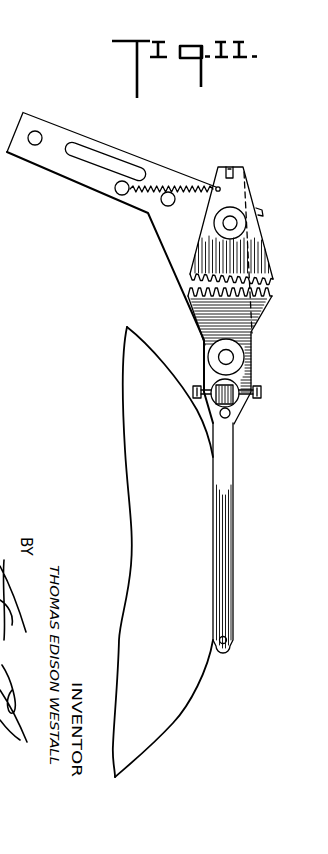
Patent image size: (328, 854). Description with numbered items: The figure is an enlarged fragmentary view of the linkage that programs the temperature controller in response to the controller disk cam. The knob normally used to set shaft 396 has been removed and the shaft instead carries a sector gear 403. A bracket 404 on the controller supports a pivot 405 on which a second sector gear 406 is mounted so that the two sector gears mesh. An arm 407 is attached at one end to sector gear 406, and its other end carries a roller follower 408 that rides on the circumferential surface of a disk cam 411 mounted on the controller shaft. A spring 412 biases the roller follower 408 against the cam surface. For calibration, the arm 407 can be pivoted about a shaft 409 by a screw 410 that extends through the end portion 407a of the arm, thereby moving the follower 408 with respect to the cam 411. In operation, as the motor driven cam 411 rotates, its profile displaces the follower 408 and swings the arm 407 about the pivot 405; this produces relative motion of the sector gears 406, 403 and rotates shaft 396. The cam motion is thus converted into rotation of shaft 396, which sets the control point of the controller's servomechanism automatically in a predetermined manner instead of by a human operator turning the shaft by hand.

The shaft 396 is at (230, 223).
The sector gear 403 is at (270, 255).
The bracket 404 is at (97, 185).
The pivot 405 is at (226, 357).
The sector gear 406 is at (260, 318).
The arm 407 is at (230, 578).
The end portion of the arm 407a is at (231, 400).
The roller follower 408 is at (231, 643).
The shaft 409 is at (235, 423).
The screw 410 is at (261, 395).
The disk cam 411 is at (183, 708).
The spring 412 is at (192, 188).